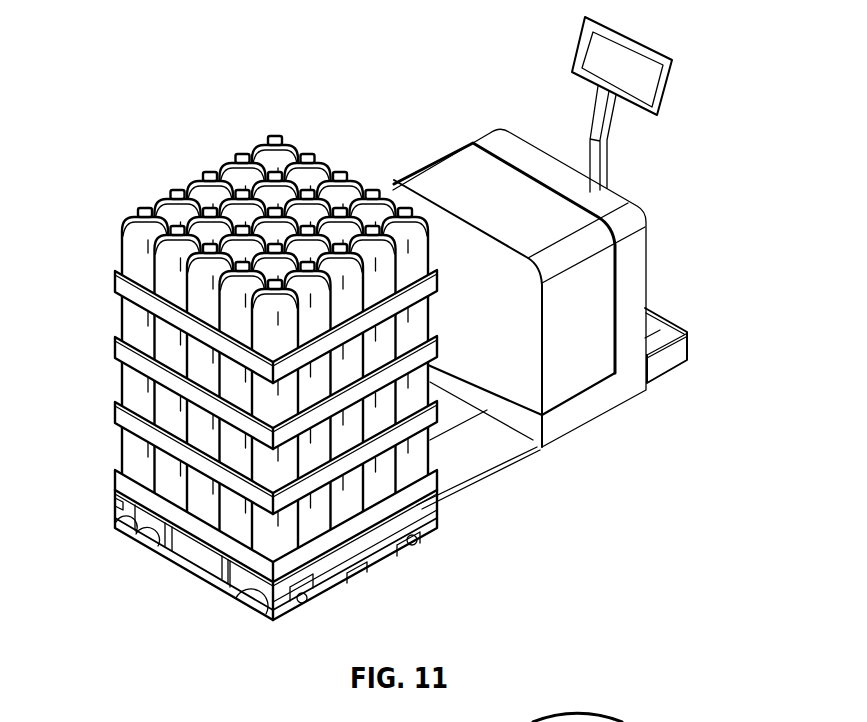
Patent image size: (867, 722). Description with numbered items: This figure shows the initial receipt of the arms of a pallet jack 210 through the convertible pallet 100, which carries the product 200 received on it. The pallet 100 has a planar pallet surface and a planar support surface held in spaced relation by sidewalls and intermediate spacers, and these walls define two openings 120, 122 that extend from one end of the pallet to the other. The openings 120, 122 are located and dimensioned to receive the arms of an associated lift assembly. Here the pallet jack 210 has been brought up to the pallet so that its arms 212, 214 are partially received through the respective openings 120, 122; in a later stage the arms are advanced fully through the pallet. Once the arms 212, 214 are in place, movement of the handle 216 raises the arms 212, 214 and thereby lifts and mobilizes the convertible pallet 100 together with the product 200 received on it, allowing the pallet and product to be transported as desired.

The convertible pallet assembly 100 is at (285, 388).
The opening 120 is at (245, 598).
The opening 122 is at (135, 531).
The product 200 is at (166, 210).
The pallet jack 210 is at (373, 311).
The arm 212 is at (457, 460).
The arm 214 is at (117, 512).
The handle 216 is at (633, 34).